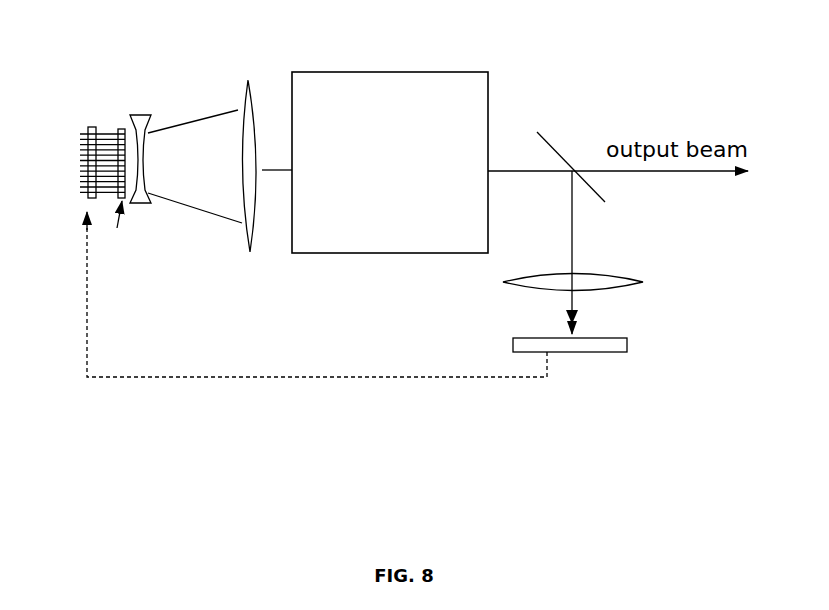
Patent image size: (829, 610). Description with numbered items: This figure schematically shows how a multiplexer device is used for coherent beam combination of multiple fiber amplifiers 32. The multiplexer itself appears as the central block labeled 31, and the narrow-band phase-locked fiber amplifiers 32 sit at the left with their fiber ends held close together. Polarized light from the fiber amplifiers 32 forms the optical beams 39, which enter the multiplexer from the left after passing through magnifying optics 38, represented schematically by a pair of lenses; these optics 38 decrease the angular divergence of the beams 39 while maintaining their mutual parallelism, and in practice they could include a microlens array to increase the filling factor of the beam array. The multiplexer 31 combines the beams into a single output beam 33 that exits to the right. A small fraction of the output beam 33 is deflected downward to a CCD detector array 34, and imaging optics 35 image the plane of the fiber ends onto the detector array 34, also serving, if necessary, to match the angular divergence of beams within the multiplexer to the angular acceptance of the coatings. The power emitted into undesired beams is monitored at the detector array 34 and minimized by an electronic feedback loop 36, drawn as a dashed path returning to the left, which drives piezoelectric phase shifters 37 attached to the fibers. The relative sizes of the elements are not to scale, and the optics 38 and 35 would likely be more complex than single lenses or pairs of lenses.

The multiplexer 31 is at (430, 69).
The fiber amplifiers 32 is at (106, 126).
The output beam 33 is at (535, 174).
The CCD detector array 34 is at (598, 356).
The imaging optics 35 is at (592, 270).
The electronic feedback loop 36 is at (477, 382).
The piezoelectric phase shifters 37 is at (88, 124).
The magnifying optics 38 is at (137, 85).
The optical beams 39 is at (203, 215).